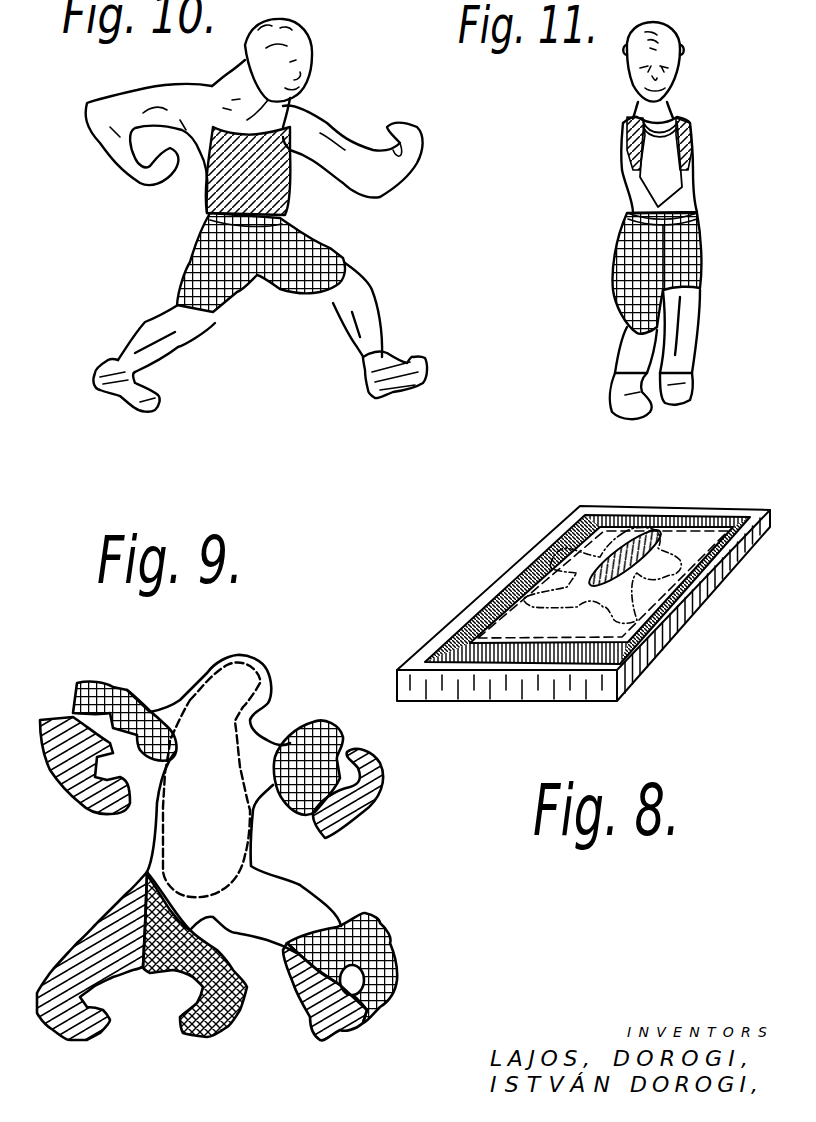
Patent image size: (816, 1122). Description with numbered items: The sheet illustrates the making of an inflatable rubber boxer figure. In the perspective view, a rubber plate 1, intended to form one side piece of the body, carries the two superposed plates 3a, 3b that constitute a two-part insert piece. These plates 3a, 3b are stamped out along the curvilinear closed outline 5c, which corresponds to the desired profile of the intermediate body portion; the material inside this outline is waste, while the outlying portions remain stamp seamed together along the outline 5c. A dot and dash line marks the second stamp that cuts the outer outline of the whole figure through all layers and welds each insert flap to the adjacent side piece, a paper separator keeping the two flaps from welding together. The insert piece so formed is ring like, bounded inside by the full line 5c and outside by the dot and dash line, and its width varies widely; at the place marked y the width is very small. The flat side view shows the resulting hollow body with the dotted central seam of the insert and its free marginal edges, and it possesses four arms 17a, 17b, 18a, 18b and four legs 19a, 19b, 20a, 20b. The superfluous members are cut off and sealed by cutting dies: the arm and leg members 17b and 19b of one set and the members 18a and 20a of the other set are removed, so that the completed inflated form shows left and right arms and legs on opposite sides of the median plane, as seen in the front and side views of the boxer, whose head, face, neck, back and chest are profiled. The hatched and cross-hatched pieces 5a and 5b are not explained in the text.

In FIG. 8, the rubber plate 1 is at (443, 650).
In FIG. 8, the superposed plate 3a is at (580, 647).
In FIG. 8, the superposed plate 3b is at (550, 587).
In FIG. 9, the diagonally hatched figure pieces 5a is at (227, 882).
In FIG. 9, the cross-hatched figure pieces 5b is at (270, 847).
In FIG. 8, the curvilinear closed outline 5c is at (610, 573).
In FIG. 9, the curvilinear closed outline 5c is at (230, 880).
In FIG. 8, the place of very small insert width y is at (603, 567).
In FIG. 9, the place of very small insert width y is at (247, 653).
In FIG. 9, the arm member 17a is at (357, 795).
In FIG. 9, the arm member 17b is at (353, 733).
In FIG. 9, the arm member 18a is at (82, 780).
In FIG. 9, the arm member 18b is at (98, 707).
In FIG. 9, the leg member 19a is at (363, 1023).
In FIG. 9, the leg member 19b is at (398, 973).
In FIG. 9, the leg member 20a is at (65, 1037).
In FIG. 9, the leg member 20b is at (198, 988).